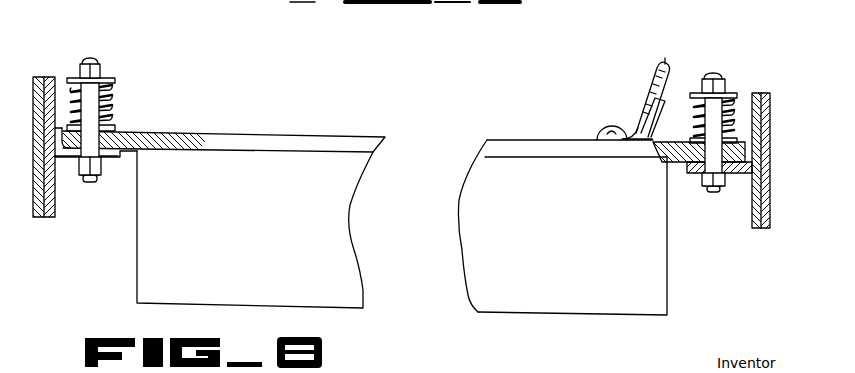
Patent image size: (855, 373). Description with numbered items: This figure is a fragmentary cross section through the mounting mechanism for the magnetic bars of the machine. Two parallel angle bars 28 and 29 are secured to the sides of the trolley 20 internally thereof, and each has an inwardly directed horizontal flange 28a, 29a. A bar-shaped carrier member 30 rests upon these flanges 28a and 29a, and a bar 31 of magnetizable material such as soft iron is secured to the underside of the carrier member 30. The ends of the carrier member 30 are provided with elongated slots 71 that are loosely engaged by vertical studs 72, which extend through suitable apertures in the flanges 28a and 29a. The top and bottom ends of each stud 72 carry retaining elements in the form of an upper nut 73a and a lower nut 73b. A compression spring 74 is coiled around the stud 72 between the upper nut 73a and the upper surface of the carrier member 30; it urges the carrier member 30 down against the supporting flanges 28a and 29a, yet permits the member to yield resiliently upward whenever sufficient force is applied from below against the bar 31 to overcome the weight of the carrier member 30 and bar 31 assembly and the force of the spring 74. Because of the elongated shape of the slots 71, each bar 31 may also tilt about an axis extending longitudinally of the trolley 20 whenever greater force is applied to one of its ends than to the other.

The trolley 20 is at (47, 74).
The angle bar 28 is at (758, 95).
The horizontal flange 28a is at (690, 170).
The angle bar 29 is at (54, 82).
The horizontal flange 29a is at (63, 153).
The carrier member 30 is at (498, 151).
The bar of magnetizable material 31 is at (268, 220).
The elongated slot 71 is at (108, 138).
The vertical stud 72 is at (92, 150).
The upper nut 73a is at (100, 72).
The lower nut 73b is at (102, 166).
The compression spring 74 is at (112, 98).